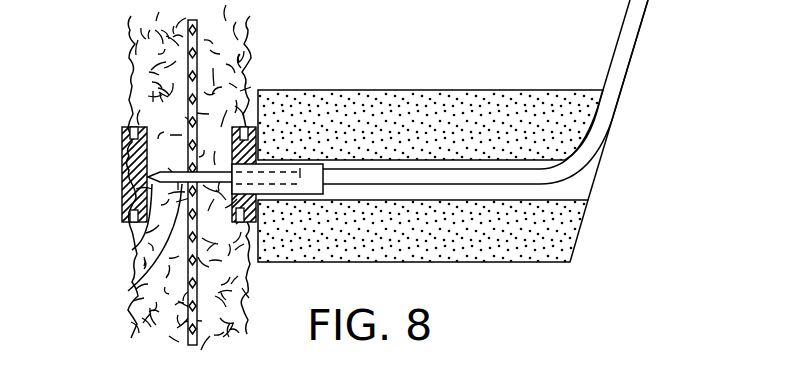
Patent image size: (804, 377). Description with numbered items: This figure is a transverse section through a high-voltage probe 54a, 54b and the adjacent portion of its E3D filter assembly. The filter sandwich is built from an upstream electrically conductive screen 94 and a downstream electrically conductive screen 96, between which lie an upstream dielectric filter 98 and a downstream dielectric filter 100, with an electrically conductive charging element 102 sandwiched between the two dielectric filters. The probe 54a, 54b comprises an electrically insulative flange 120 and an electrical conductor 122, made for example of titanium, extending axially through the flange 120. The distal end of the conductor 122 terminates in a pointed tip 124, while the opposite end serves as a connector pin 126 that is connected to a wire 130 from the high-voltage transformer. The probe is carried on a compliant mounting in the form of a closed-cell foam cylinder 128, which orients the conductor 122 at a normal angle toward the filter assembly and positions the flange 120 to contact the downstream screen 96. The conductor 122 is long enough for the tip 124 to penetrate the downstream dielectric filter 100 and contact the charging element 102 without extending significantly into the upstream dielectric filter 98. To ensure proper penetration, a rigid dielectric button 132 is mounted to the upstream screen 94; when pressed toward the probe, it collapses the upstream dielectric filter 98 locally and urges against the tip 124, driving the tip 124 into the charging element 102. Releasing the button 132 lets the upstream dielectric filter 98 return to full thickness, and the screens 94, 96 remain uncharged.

The high-voltage probe 54a is at (426, 261).
The high-voltage probe 54b is at (507, 248).
The upstream electrically conductive screen 94 is at (194, 175).
The downstream electrically conductive screen 96 is at (250, 60).
The upstream dielectric filter 98 is at (160, 106).
The downstream dielectric filter 100 is at (243, 40).
The electrically conductive charging element 102 is at (191, 52).
The flange 120 is at (240, 161).
The electrical conductor 122 is at (130, 289).
The pointed tip 124 is at (132, 250).
The connector pin 126 is at (290, 163).
The closed-cell foam cylinder 128 is at (513, 112).
The wire 130 is at (627, 41).
The button 132 is at (123, 181).